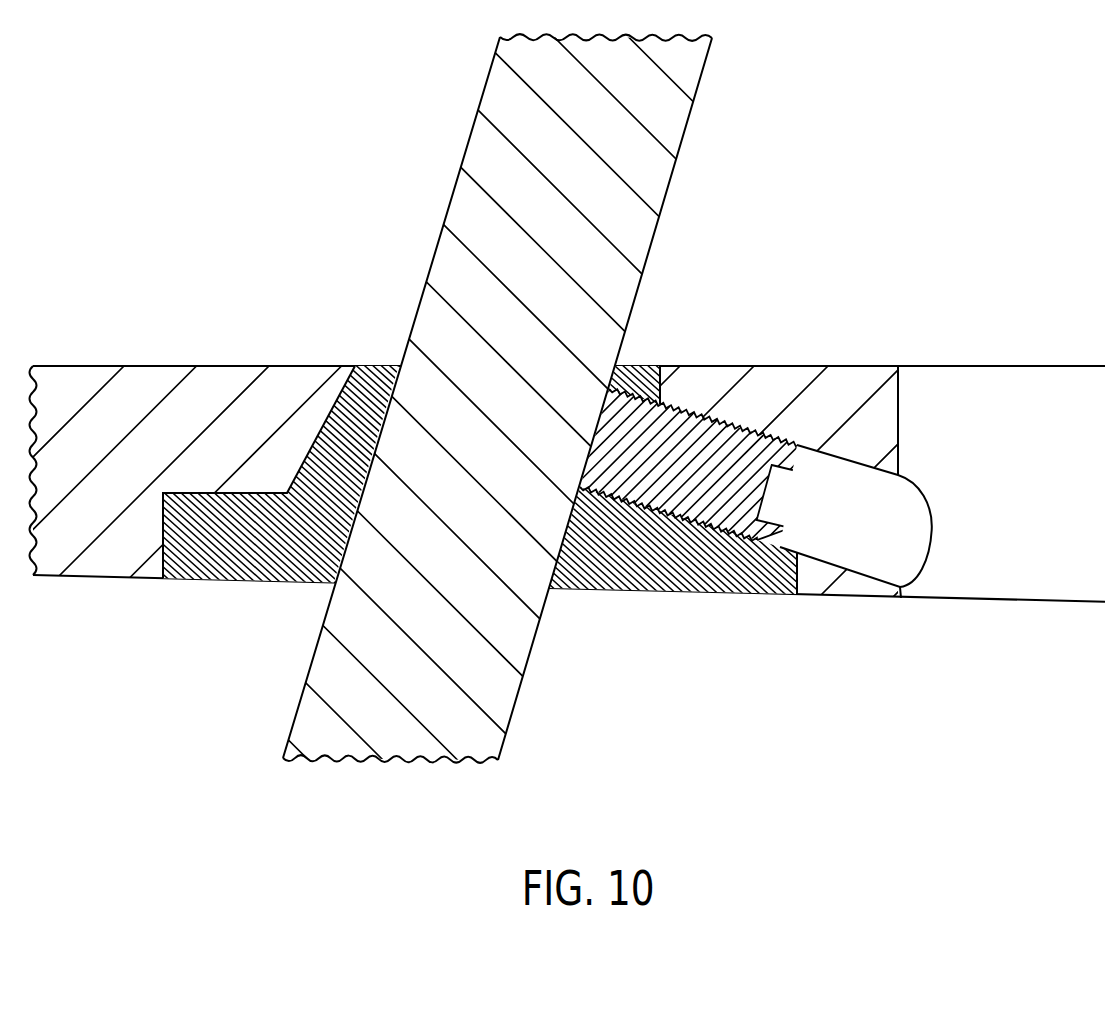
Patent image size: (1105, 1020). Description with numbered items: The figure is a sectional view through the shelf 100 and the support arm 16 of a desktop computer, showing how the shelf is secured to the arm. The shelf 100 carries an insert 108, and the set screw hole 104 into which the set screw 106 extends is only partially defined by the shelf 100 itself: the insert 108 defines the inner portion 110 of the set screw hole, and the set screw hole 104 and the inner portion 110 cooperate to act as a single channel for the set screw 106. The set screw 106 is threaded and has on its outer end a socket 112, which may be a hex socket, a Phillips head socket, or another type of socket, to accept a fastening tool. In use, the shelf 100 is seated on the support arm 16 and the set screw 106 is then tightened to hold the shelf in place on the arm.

The support arm 16 is at (658, 182).
The shelf 100 is at (144, 361).
The set screw hole 104 is at (898, 472).
The set screw 106 is at (816, 490).
The insert 108 is at (379, 364).
The inner portion 110 is at (692, 408).
The socket 112 is at (782, 503).